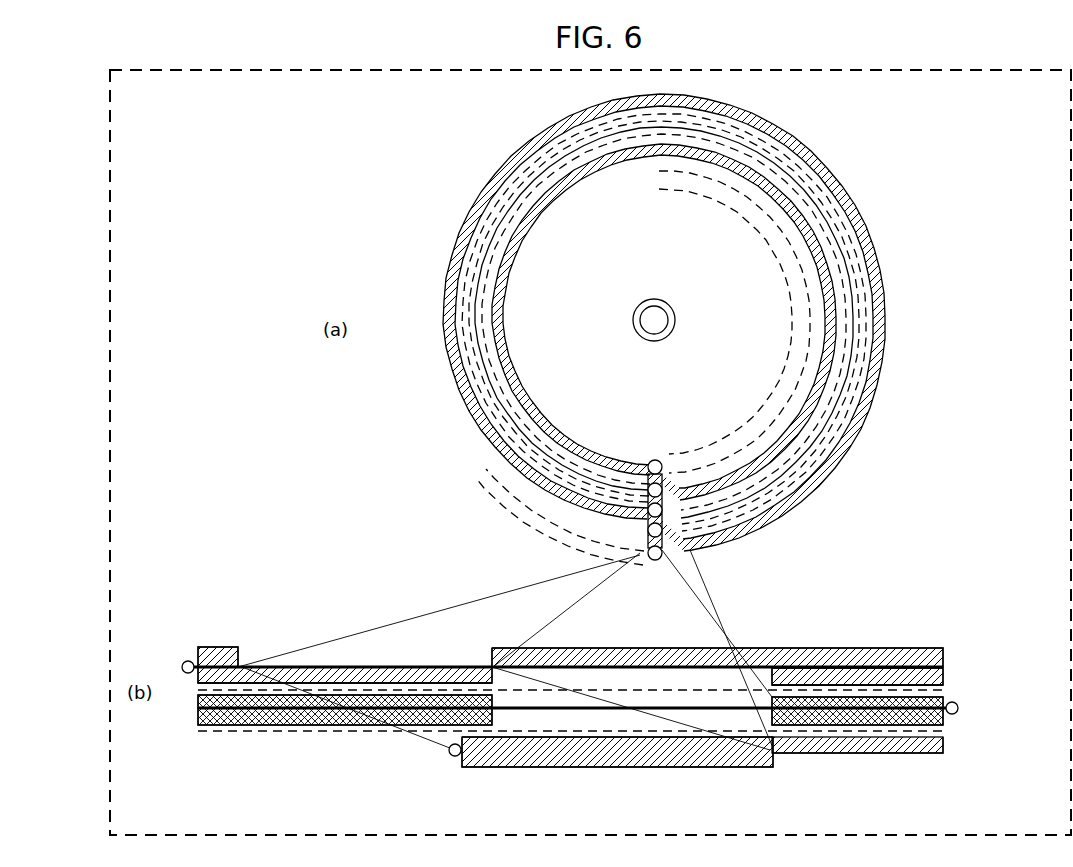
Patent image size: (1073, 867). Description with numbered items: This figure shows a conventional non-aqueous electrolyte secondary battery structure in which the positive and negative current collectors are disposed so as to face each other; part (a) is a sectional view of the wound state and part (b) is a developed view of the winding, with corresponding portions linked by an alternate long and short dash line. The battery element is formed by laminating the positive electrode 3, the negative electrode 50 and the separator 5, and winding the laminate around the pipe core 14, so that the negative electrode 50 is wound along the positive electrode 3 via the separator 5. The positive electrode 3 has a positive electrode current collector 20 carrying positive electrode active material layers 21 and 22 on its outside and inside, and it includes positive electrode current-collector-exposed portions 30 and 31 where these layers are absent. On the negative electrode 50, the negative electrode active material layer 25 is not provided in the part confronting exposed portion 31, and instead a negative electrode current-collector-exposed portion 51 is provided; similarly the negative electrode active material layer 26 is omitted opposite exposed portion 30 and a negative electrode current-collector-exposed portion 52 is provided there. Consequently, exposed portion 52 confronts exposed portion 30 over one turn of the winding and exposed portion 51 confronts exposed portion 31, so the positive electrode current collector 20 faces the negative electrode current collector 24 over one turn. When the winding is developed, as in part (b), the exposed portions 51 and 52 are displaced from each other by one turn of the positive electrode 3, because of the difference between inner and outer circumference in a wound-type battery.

The positive electrode 3 is at (1026, 700).
The separator 5 is at (573, 462).
The pipe core 14 is at (686, 320).
The positive electrode current collector 20 is at (945, 725).
The positive electrode active material layer 21 is at (945, 746).
The positive electrode active material layer 22 is at (484, 394).
The negative electrode current collector 24 is at (943, 666).
The negative electrode active material layer 25 is at (510, 468).
The negative electrode active material layer 26 is at (503, 297).
The positive electrode current-collector-exposed portion 30 is at (480, 420).
The positive electrode current-collector-exposed portion 31 is at (480, 366).
The negative electrode 50 is at (1026, 598).
The negative electrode current-collector-exposed portion 51 is at (480, 330).
The negative electrode current-collector-exposed portion 52 is at (500, 438).